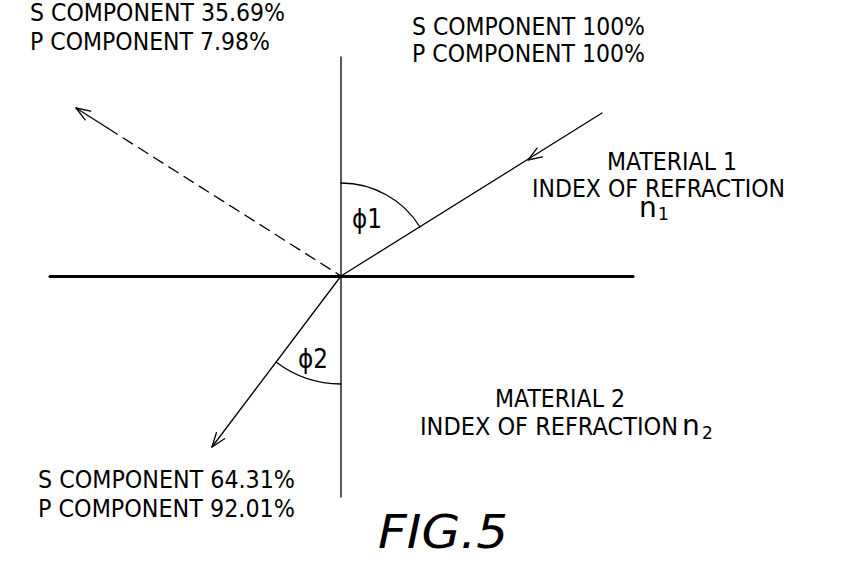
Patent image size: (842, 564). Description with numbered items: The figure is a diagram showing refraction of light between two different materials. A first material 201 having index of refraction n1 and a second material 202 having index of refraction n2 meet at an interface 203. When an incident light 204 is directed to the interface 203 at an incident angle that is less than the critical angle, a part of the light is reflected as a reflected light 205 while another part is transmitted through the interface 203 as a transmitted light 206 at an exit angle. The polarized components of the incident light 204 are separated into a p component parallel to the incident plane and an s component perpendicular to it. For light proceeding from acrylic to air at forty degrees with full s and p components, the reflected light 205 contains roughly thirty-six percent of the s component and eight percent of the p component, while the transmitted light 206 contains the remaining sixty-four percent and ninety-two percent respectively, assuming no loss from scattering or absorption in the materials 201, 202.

The material 201 is at (517, 254).
The material 202 is at (470, 358).
The interface 203 is at (583, 277).
The incident light 204 is at (480, 189).
The reflected light 205 is at (201, 187).
The transmitted light 206 is at (250, 393).